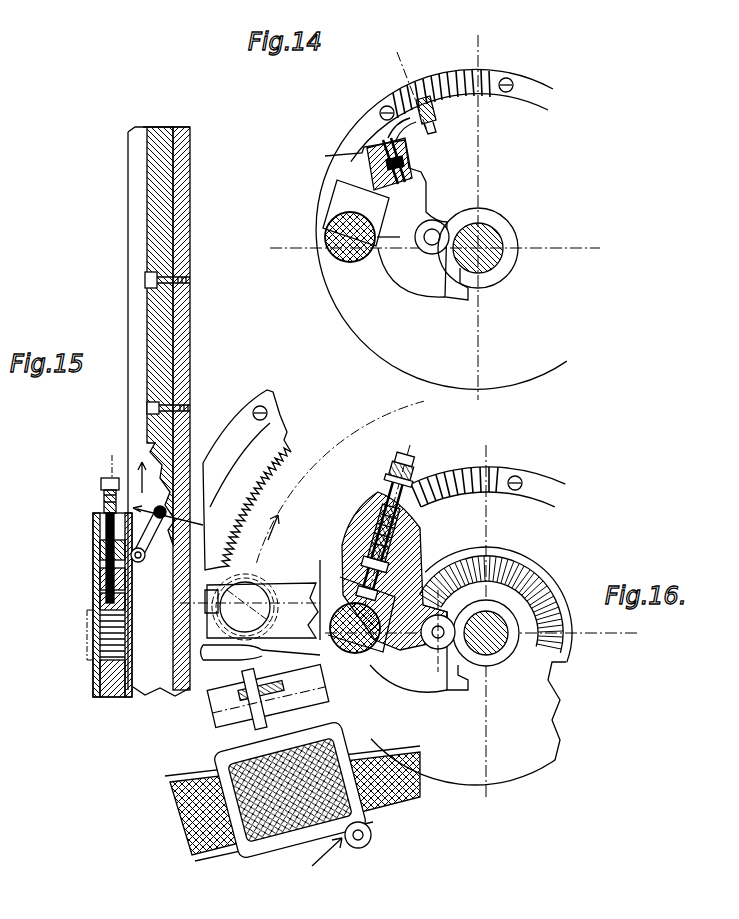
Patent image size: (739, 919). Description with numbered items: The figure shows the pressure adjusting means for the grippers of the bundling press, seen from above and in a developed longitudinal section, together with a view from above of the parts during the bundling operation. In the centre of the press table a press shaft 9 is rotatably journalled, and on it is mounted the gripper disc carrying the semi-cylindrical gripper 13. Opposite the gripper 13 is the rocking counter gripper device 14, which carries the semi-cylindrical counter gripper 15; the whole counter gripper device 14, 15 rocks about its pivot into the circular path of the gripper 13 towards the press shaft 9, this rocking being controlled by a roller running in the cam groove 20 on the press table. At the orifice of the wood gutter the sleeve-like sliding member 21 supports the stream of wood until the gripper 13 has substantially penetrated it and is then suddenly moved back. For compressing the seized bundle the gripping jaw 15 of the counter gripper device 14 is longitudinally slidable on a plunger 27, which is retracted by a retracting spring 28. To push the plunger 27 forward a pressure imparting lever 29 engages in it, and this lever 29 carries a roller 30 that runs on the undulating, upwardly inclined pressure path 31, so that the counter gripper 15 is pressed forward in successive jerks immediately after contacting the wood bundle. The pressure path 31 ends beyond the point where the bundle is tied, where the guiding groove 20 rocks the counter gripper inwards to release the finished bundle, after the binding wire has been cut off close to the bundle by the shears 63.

In FIG. 14, the press shaft 9 is at (493, 265).
In FIG. 16, the press shaft 9 is at (497, 665).
In FIG. 14, the semi-cylindrical gripper 13 is at (320, 227).
In FIG. 16, the semi-cylindrical gripper 13 is at (360, 673).
In FIG. 14, the rocking counter gripper device 14 is at (337, 160).
In FIG. 16, the rocking counter gripper device 14 is at (425, 540).
In FIG. 14, the semi-cylindrical counter gripper 15 is at (333, 192).
In FIG. 15, the semi-cylindrical counter gripper 15 is at (93, 610).
In FIG. 16, the semi-cylindrical counter gripper 15 is at (387, 647).
In FIG. 16, the cam groove 20 is at (533, 597).
In FIG. 16, the sleeve-like sliding member 21 is at (237, 840).
In FIG. 15, the plunger 27 is at (95, 597).
In FIG. 16, the plunger 27 is at (383, 523).
In FIG. 15, the retracting spring 28 is at (103, 503).
In FIG. 16, the retracting spring 28 is at (388, 492).
In FIG. 14, the pressure imparting lever 29 is at (405, 123).
In FIG. 15, the pressure imparting lever 29 is at (120, 557).
In FIG. 16, the pressure imparting lever 29 is at (358, 540).
In FIG. 14, the roller 30 is at (420, 97).
In FIG. 15, the roller 30 is at (178, 522).
In FIG. 14, the pressure path 31 is at (488, 74).
In FIG. 15, the pressure path 31 is at (157, 457).
In FIG. 16, the pressure path 31 is at (450, 470).
In FIG. 16, the shears 63 is at (266, 602).